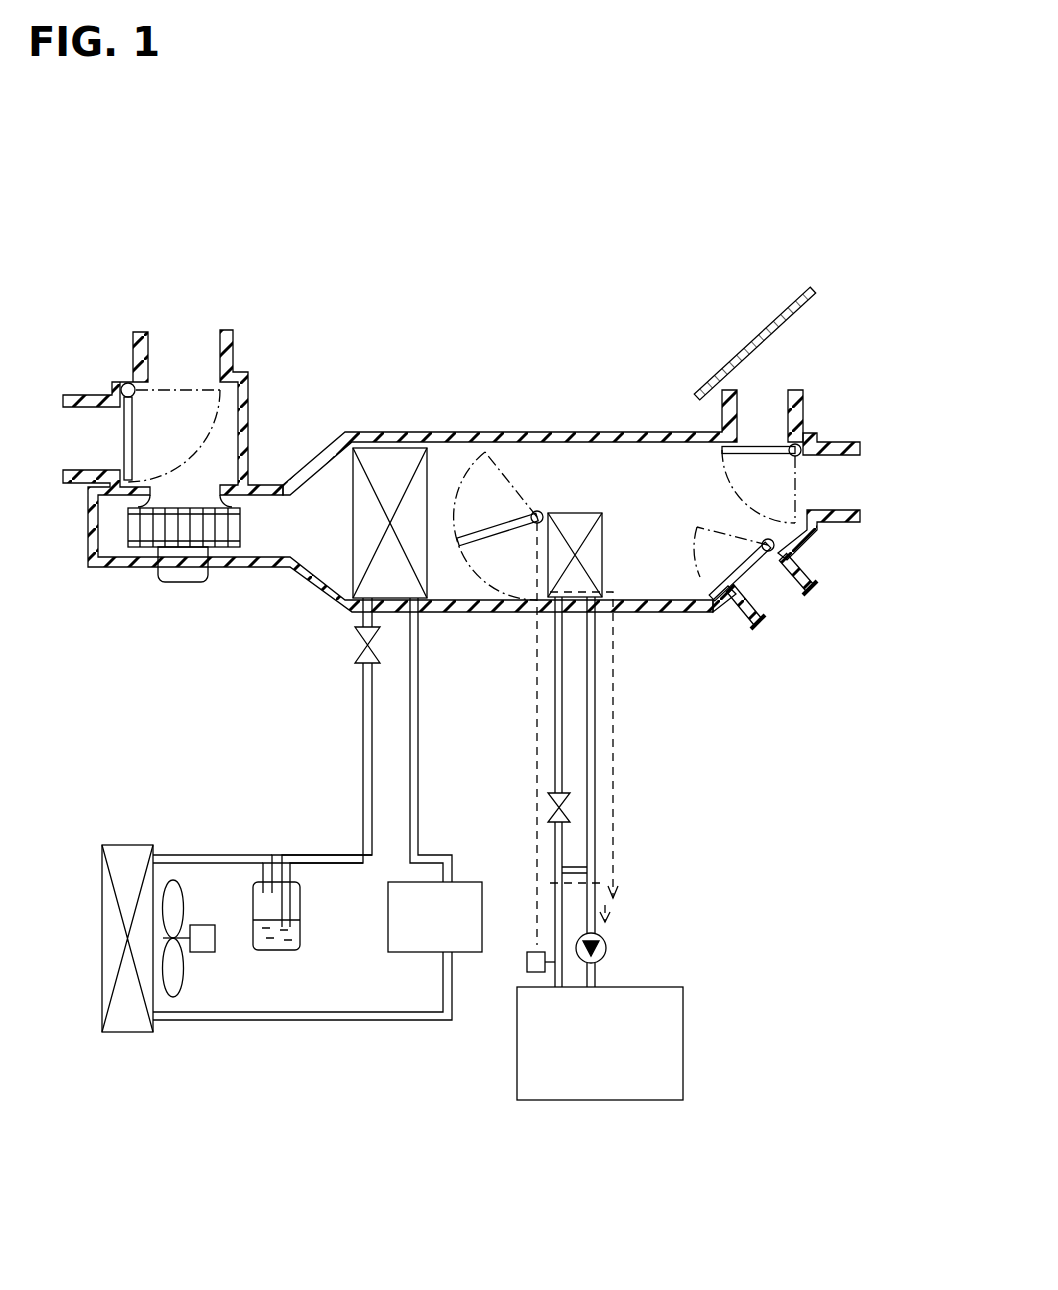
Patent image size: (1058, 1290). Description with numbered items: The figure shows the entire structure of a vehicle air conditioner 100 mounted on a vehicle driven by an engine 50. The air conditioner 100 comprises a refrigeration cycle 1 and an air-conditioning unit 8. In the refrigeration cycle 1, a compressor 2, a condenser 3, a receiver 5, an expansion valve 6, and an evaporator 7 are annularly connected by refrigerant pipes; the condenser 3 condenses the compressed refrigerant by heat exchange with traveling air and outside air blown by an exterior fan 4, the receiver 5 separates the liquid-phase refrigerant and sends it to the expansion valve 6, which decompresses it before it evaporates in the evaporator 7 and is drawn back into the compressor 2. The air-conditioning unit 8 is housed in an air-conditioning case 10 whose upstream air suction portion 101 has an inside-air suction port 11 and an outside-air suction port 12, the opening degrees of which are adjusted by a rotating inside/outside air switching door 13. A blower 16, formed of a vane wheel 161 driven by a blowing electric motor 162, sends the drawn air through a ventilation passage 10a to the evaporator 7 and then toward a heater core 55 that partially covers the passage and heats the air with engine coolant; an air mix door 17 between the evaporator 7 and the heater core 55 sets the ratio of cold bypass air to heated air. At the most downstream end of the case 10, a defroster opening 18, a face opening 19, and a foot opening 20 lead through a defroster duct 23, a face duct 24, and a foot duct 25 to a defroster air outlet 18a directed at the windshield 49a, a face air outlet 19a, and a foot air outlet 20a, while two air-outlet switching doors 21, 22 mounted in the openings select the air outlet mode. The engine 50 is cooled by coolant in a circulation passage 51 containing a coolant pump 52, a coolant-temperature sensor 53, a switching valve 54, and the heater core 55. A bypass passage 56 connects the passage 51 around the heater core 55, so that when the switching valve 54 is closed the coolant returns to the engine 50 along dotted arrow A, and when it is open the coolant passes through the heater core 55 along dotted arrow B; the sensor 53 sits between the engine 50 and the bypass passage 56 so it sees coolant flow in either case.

The vehicle air conditioner 100 is at (567, 356).
The refrigeration cycle 1 is at (215, 836).
The compressor 2 is at (476, 952).
The condenser 3 is at (128, 1032).
The exterior fan 4 is at (178, 997).
The receiver 5 is at (272, 950).
The expansion valve 6 is at (352, 666).
The evaporator 7 is at (373, 455).
The air-conditioning unit 8 is at (443, 426).
The air-conditioning case 10 is at (534, 432).
The ventilation passage 10a is at (307, 497).
The inside-air suction port 11 is at (86, 443).
The outside-air suction port 12 is at (178, 346).
The inside/outside air switching door 13 is at (124, 453).
The blower 16 is at (205, 594).
The vane wheel 161 is at (243, 548).
The blowing electric motor 162 is at (182, 596).
The air mix door 17 is at (490, 542).
The defroster opening 18 is at (775, 430).
The defroster air outlet 18a is at (750, 390).
The face opening 19 is at (825, 488).
The face air outlet 19a is at (853, 488).
The foot opening 20 is at (758, 594).
The foot air outlet 20a is at (782, 603).
The air-outlet switching door 21 is at (796, 437).
The air-outlet switching door 22 is at (738, 602).
The defroster duct 23 is at (722, 416).
The face duct 24 is at (836, 522).
The foot duct 25 is at (797, 565).
The windshield 49a is at (793, 310).
The engine 50 is at (600, 1100).
The circulation passage 51 is at (596, 712).
The coolant pump 52 is at (607, 948).
The coolant-temperature sensor 53 is at (530, 975).
The switching valve 54 is at (552, 808).
The heater core 55 is at (603, 558).
The bypass passage 56 is at (575, 870).
The air suction portion 101 is at (250, 407).
The dotted arrow A is at (550, 884).
The dotted arrow B is at (537, 750).